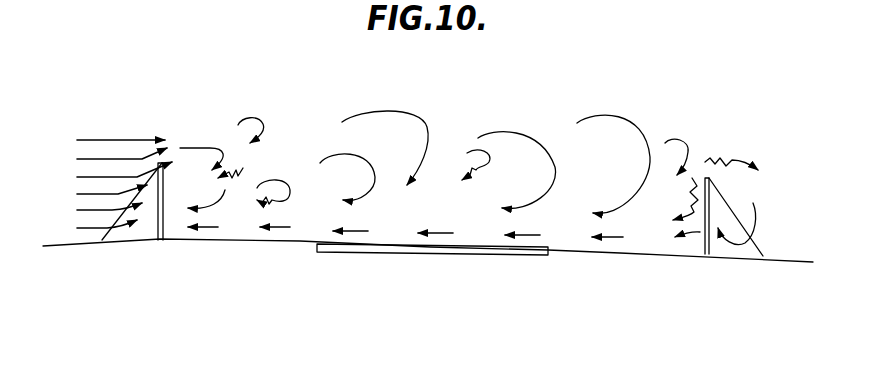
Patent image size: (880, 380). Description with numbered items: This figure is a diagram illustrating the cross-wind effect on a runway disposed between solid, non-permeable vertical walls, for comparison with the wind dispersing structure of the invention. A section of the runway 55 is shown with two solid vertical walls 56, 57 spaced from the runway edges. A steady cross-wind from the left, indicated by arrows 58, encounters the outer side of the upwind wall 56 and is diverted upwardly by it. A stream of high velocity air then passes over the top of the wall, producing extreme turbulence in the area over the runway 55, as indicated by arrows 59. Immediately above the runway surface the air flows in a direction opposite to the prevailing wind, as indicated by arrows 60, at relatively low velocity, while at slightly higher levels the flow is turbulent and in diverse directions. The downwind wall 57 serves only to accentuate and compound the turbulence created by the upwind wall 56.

The runway 55 is at (450, 257).
The solid vertical wall 56 is at (163, 226).
The solid vertical wall 57 is at (704, 243).
The arrows 58 is at (92, 178).
The arrows 59 is at (473, 143).
The arrows 60 is at (362, 233).